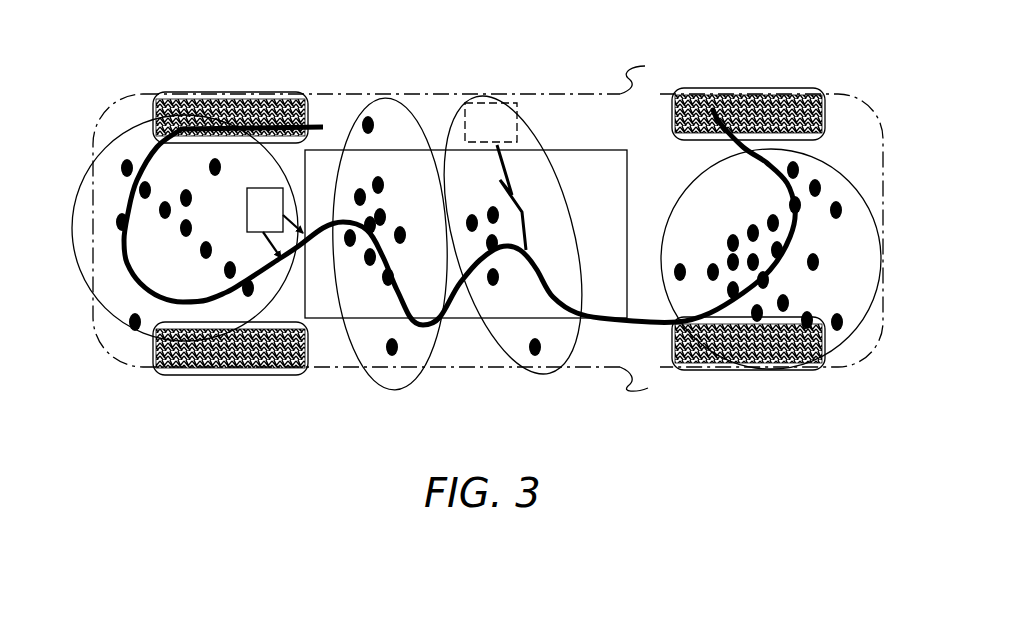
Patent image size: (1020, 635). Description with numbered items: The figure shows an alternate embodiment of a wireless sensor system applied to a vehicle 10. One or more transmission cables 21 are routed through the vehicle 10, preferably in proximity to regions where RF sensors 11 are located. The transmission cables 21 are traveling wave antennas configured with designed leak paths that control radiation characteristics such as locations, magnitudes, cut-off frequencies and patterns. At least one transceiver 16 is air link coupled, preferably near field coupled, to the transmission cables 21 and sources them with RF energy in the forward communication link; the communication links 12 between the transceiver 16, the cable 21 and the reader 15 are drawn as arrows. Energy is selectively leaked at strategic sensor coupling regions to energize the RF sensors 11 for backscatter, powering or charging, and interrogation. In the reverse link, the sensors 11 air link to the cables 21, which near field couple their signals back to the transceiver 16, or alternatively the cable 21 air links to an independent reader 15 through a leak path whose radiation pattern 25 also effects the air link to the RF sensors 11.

The vehicle 10 is at (574, 93).
The RF sensors 11 is at (479, 283).
The communication links 12 is at (256, 258).
The reader 15 is at (508, 101).
The transceiver 16 is at (247, 207).
The transmission cable 21 is at (588, 316).
The radiation pattern 25 is at (88, 172).